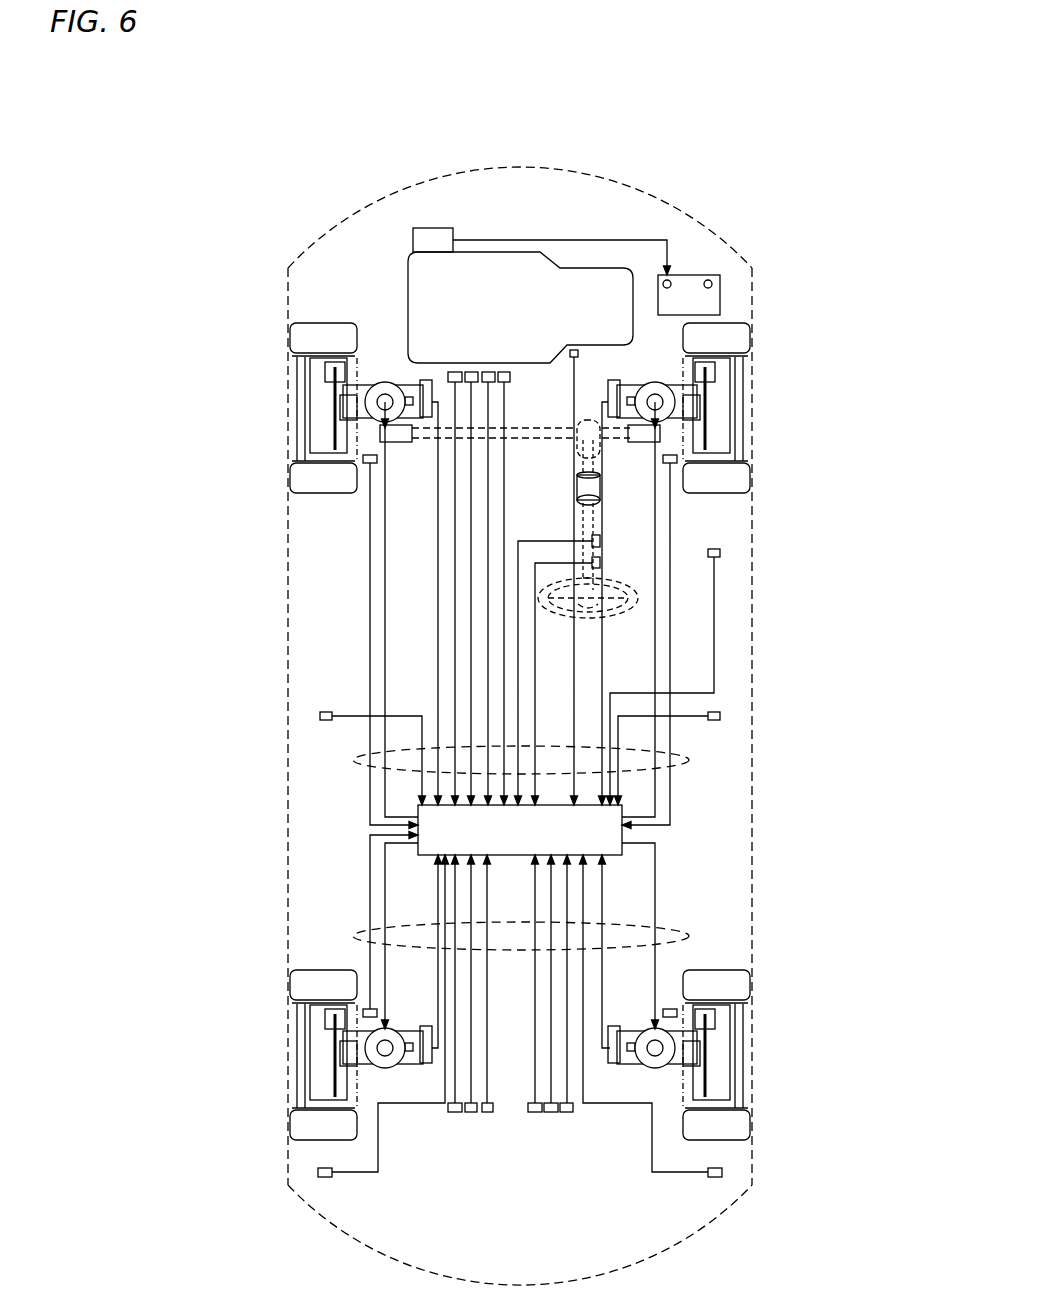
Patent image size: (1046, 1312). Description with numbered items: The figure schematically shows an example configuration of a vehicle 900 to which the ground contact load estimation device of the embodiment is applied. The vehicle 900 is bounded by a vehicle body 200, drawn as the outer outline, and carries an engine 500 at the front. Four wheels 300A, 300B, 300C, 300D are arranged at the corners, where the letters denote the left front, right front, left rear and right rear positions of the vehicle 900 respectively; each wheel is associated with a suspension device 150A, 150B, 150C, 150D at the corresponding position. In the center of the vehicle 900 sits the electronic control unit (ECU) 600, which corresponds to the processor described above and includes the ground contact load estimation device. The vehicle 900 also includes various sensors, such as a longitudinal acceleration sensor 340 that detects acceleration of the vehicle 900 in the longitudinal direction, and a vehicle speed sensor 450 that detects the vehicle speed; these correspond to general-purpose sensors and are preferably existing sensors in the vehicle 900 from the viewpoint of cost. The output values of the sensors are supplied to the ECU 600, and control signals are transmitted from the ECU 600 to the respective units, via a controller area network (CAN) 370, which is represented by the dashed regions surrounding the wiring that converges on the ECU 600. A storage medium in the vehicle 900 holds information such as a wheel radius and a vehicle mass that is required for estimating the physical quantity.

The vehicle 900 is at (721, 127).
The vehicle body 200 is at (735, 252).
The engine 500 is at (408, 302).
The wheel 300A is at (292, 370).
The wheel 300B is at (748, 370).
The wheel 300C is at (292, 1017).
The wheel 300D is at (748, 1017).
The suspension device 150A is at (359, 433).
The suspension device 150B is at (681, 433).
The suspension device 150C is at (366, 1074).
The suspension device 150D is at (674, 1074).
The controller area network (CAN) 370 is at (683, 938).
The electronic control unit (ECU) 600 is at (512, 857).
The longitudinal acceleration sensor 340 is at (470, 1113).
The vehicle speed sensor 450 is at (566, 1113).